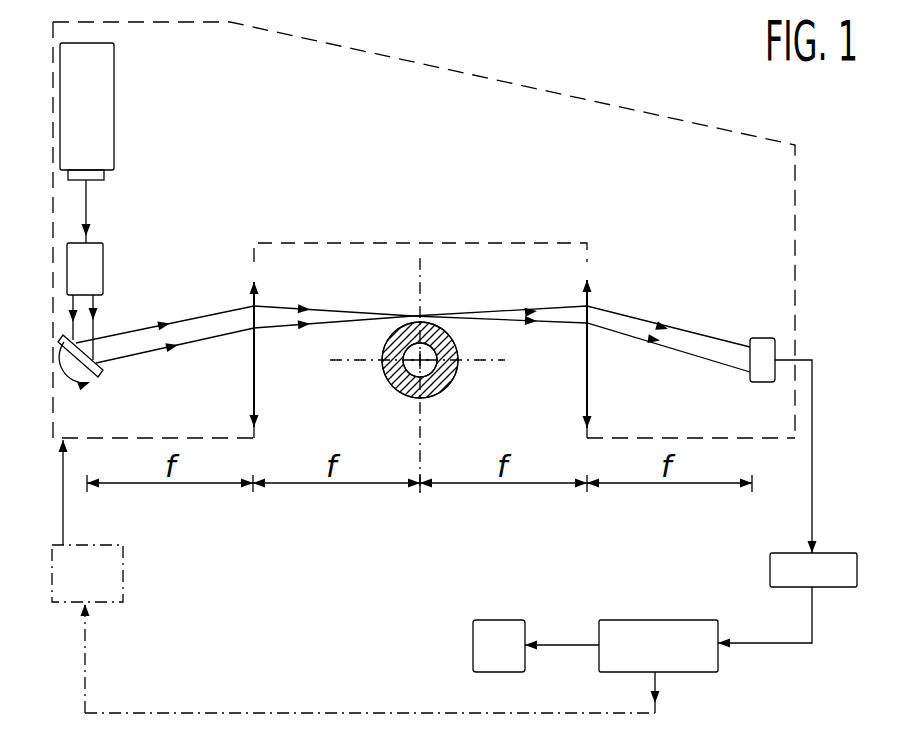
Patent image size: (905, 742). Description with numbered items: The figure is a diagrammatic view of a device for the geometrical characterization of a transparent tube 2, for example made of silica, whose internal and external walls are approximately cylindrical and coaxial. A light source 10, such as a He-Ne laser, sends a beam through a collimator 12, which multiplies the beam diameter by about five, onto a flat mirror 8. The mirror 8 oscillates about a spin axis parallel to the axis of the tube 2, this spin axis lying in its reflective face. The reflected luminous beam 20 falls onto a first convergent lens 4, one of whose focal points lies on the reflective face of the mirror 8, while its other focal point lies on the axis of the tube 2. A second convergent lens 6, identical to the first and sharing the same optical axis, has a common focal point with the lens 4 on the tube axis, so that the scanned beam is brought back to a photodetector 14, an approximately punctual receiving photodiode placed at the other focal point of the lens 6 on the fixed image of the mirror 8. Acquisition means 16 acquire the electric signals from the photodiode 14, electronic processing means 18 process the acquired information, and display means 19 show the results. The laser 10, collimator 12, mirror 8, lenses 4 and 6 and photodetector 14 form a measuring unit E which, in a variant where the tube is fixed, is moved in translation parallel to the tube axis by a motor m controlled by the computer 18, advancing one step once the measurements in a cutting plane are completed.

The transparent tube 2 is at (445, 378).
The first convergent lens 4 is at (256, 292).
The second convergent lens 6 is at (586, 288).
The flat mirror 8 is at (94, 378).
The light source 10 is at (108, 97).
The collimator 12 is at (100, 256).
The photodetector 14 is at (767, 342).
The acquisition means 16 is at (773, 578).
The electronic processing means 18 is at (616, 622).
The display means 19 is at (487, 622).
The luminous beam 20 is at (160, 348).
The measuring unit E is at (540, 85).
The motor m is at (100, 575).